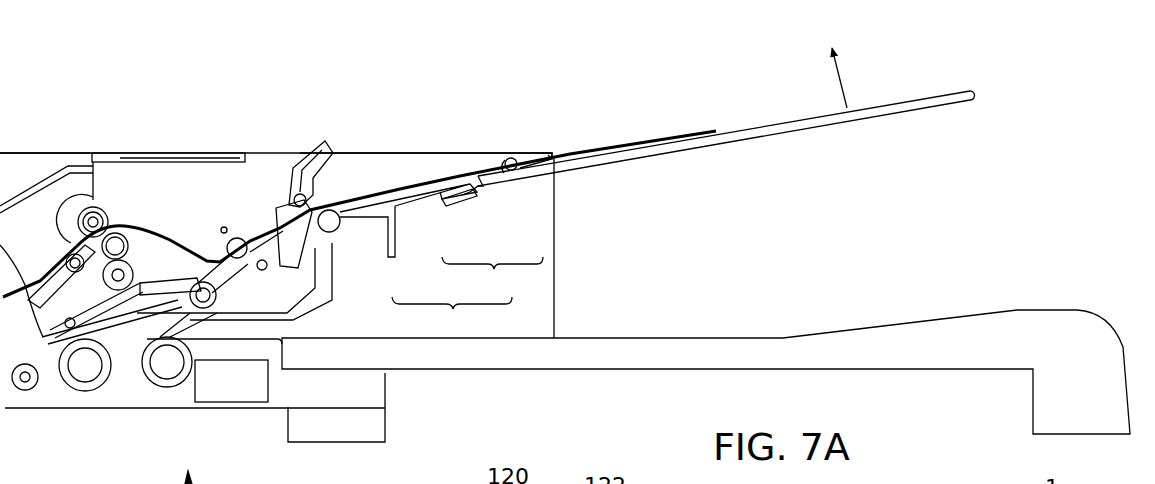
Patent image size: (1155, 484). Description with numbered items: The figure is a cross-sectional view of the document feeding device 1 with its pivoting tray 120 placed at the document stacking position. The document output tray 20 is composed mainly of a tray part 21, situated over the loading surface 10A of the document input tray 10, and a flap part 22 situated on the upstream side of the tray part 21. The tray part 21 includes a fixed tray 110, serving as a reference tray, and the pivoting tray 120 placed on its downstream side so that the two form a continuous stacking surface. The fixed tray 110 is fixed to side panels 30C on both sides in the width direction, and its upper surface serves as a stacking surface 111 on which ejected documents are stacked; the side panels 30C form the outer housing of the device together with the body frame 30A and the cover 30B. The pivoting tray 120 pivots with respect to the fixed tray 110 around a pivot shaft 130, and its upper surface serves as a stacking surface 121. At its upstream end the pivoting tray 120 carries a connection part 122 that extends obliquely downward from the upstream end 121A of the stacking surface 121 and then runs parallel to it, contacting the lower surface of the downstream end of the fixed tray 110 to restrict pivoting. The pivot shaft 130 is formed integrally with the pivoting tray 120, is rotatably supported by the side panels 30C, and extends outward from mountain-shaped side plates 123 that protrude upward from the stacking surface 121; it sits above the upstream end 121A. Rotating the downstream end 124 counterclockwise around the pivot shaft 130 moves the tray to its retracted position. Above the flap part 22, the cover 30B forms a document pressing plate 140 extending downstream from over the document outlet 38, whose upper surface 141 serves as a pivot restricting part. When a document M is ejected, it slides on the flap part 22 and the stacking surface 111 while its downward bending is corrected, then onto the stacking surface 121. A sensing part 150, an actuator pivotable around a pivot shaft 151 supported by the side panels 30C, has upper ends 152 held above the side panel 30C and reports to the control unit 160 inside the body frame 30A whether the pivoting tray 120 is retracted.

The document feeding device 1 is at (1082, 70).
The document input tray 10 is at (722, 298).
The loading surface 10A is at (627, 336).
The document output tray 20 is at (452, 313).
The tray part 21 is at (492, 277).
The flap part 22 is at (345, 238).
The body frame 30A is at (86, 416).
The cover 30B is at (63, 150).
The side panel 30C is at (422, 152).
The document outlet 38 is at (120, 216).
The fixed tray 110 is at (405, 216).
The stacking surface 111 is at (398, 168).
The pivoting tray 120 is at (610, 172).
The stacking surface 121 is at (752, 128).
The upstream end 121A is at (481, 178).
The connection part 122 is at (463, 200).
The side plate 123 is at (528, 158).
The downstream end 124 is at (974, 94).
The pivot shaft 130 is at (512, 157).
The document pressing plate 140 is at (150, 150).
The upper surface 141 is at (190, 153).
The sensing part 150 is at (282, 172).
The pivot shaft 151 is at (292, 196).
The upper end 152 is at (327, 140).
The control unit 160 is at (235, 403).
The document M is at (640, 134).